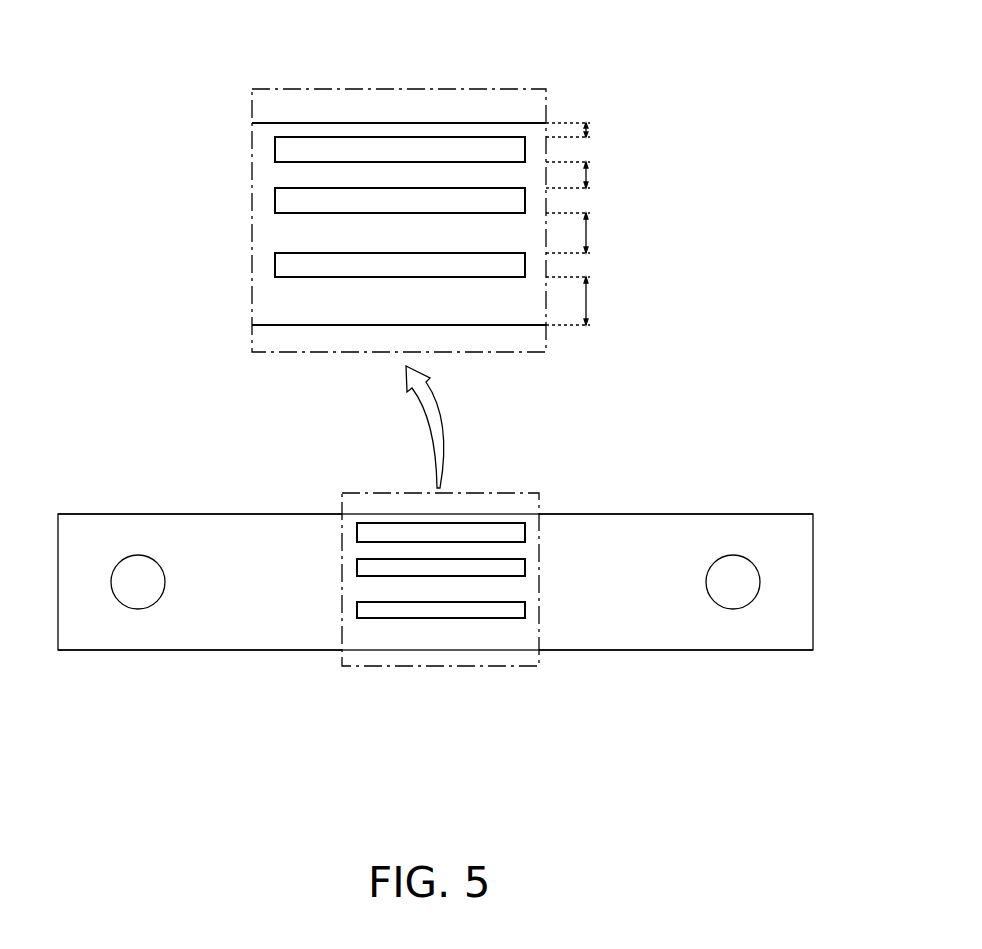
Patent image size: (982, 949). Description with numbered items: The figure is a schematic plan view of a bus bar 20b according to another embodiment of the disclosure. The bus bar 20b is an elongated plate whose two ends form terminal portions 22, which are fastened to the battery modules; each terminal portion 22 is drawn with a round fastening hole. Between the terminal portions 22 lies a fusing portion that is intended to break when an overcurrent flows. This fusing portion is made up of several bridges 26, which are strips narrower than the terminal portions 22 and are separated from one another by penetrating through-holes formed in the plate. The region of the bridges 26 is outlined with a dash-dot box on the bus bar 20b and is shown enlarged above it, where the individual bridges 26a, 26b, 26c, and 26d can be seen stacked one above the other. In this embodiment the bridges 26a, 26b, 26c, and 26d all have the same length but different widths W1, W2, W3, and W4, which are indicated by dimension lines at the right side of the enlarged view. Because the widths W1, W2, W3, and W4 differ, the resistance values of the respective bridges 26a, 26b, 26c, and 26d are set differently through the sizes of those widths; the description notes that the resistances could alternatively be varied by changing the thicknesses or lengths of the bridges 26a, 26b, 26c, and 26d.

The bus bar 20b is at (147, 451).
The terminal portions 22 is at (212, 633).
The bridges 26 is at (491, 119).
The bridge 26a is at (313, 137).
The bridge 26b is at (298, 176).
The bridge 26c is at (298, 234).
The bridge 26d is at (303, 292).
The width W1 is at (610, 132).
The width W2 is at (610, 175).
The width W3 is at (610, 233).
The width W4 is at (610, 301).